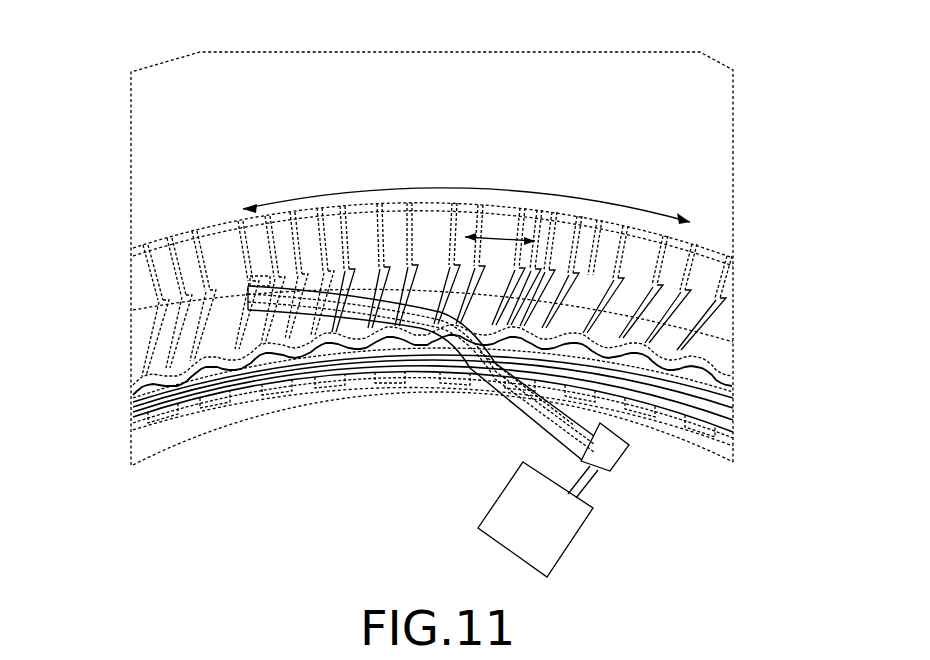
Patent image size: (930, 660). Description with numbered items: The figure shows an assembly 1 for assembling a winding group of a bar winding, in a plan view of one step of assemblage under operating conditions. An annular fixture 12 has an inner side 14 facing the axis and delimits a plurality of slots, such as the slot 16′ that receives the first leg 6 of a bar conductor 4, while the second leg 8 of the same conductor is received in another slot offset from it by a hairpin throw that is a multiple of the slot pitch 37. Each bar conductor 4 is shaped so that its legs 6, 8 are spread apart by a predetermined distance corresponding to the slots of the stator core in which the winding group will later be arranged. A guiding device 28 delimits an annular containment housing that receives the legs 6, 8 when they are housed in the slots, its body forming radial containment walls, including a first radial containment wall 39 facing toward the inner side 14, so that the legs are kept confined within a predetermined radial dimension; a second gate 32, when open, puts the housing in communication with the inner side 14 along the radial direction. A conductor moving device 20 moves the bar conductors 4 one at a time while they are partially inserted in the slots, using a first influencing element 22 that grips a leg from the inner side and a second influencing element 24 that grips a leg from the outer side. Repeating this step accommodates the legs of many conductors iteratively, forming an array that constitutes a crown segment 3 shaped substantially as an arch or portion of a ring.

The assembly 1 is at (124, 99).
The crown segment 3 is at (672, 342).
The bar conductor 4 is at (366, 295).
The first leg 6 is at (250, 318).
The second leg 8 is at (603, 426).
The annular fixture 12 is at (683, 144).
The inner side 14 is at (408, 426).
The slot 16′ is at (232, 214).
The conductor moving device 20 is at (548, 540).
The first influencing element 22 is at (590, 482).
The second influencing element 24 is at (252, 257).
The guiding device 28 is at (713, 440).
The second gate 32 is at (614, 404).
The slot pitch 37 is at (505, 244).
The first radial containment wall 39 is at (457, 190).